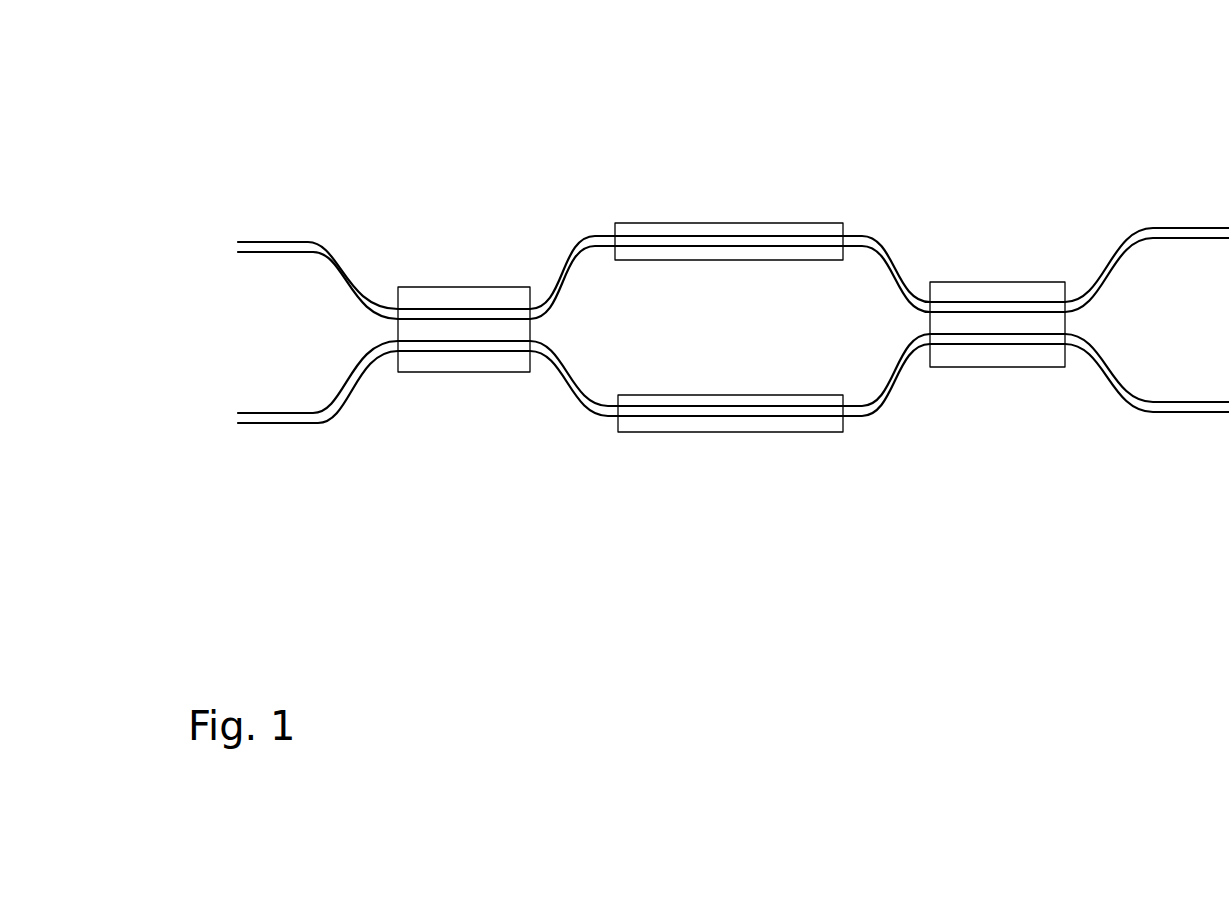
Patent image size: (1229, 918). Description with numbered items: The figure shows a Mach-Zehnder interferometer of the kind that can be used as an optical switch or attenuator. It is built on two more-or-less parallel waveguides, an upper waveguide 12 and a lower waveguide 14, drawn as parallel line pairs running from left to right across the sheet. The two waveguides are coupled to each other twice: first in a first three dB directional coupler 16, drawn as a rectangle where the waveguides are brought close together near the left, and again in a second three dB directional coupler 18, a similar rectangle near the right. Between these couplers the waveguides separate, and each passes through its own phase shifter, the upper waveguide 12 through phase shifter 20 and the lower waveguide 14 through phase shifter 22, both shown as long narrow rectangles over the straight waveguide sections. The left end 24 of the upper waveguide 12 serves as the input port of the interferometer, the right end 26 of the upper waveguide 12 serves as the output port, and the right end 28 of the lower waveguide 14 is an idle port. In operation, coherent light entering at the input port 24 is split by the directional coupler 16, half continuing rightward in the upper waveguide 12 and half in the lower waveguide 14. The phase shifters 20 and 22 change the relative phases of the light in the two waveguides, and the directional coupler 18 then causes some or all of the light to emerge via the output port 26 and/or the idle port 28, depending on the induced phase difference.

The upper waveguide 12 is at (592, 243).
The lower waveguide 14 is at (571, 378).
The first 3 dB directional coupler 16 is at (457, 297).
The second 3 dB directional coupler 18 is at (1002, 288).
The phase shifter 20 is at (760, 228).
The phase shifter 22 is at (730, 425).
The left end of upper waveguide 24 is at (260, 243).
The right end of upper waveguide 26 is at (1208, 232).
The right end of lower waveguide 28 is at (1222, 402).